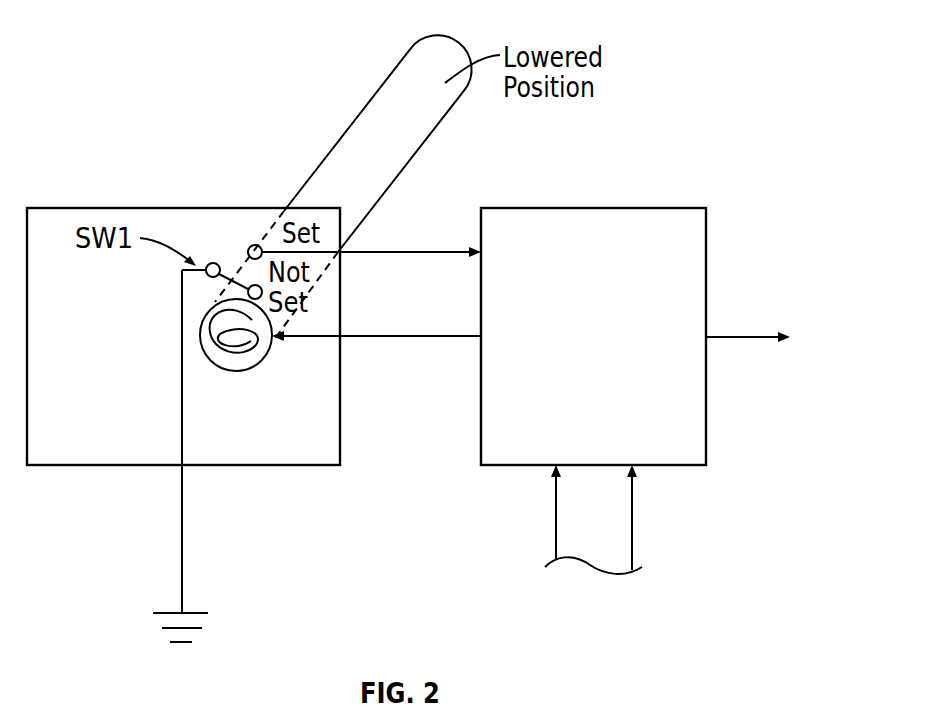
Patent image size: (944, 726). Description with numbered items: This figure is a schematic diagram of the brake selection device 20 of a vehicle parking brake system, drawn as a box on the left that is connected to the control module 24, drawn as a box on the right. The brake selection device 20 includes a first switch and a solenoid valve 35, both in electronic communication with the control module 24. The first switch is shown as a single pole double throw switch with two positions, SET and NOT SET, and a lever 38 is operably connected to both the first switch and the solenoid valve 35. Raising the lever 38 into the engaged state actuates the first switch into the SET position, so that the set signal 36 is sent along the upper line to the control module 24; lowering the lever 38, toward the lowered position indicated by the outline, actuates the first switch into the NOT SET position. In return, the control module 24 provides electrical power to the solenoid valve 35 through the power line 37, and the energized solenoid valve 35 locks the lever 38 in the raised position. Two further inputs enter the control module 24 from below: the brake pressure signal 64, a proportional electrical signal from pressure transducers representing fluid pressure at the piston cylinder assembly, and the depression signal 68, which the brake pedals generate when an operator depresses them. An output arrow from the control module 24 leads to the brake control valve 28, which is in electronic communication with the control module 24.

The brake selection device 20 is at (185, 208).
The control module 24 is at (595, 208).
The brake control valve 28 is at (748, 337).
The solenoid valve 35 is at (233, 372).
The set signal 36 is at (423, 252).
The power line 37 is at (400, 337).
The lever 38 is at (368, 127).
The brake pressure signal 64 is at (553, 532).
The depression signal 68 is at (633, 530).